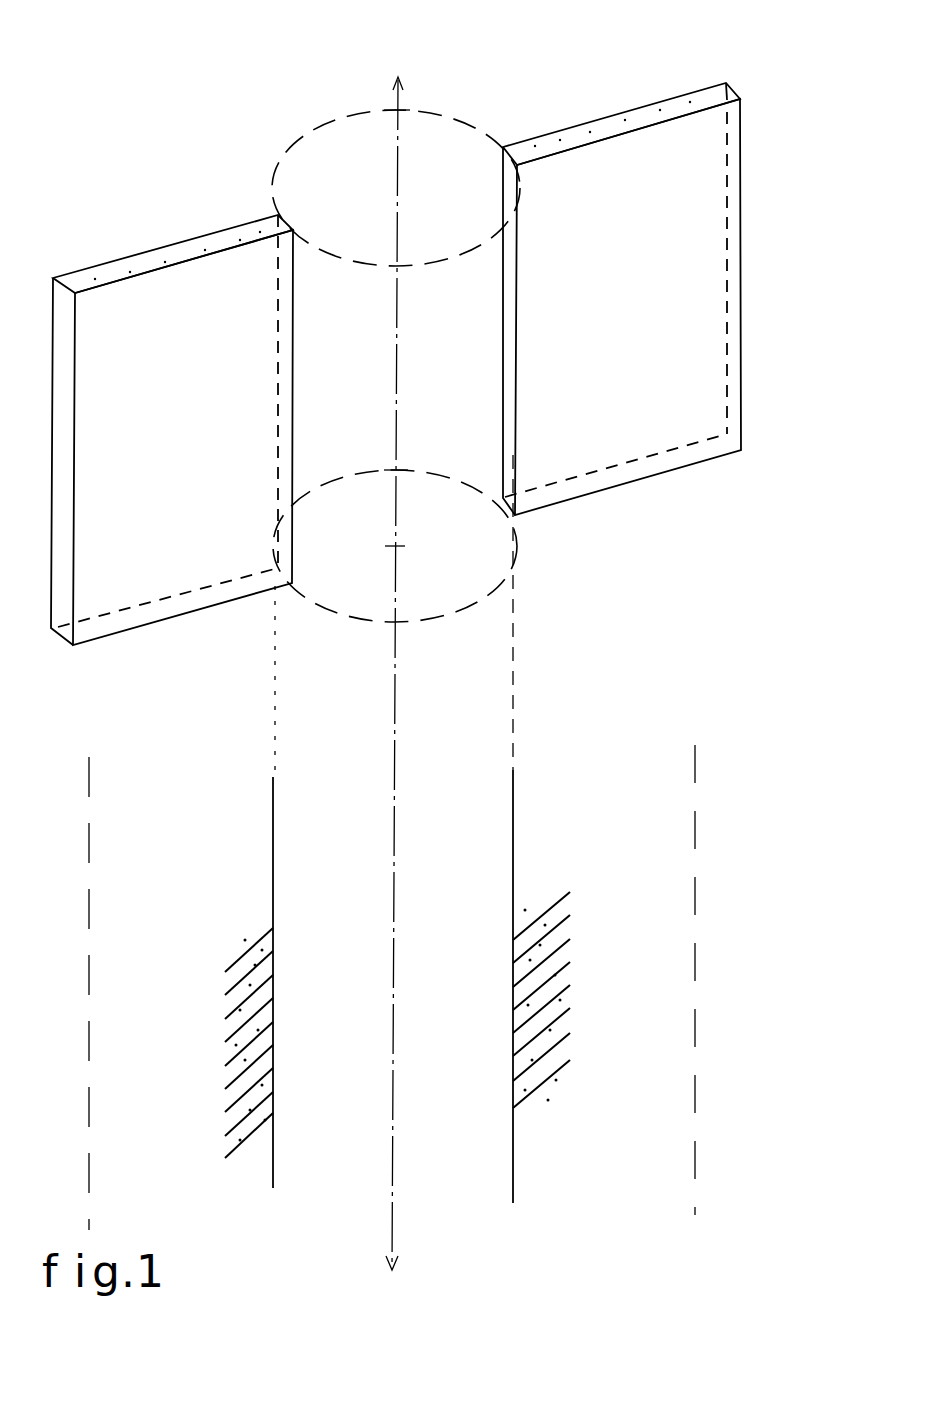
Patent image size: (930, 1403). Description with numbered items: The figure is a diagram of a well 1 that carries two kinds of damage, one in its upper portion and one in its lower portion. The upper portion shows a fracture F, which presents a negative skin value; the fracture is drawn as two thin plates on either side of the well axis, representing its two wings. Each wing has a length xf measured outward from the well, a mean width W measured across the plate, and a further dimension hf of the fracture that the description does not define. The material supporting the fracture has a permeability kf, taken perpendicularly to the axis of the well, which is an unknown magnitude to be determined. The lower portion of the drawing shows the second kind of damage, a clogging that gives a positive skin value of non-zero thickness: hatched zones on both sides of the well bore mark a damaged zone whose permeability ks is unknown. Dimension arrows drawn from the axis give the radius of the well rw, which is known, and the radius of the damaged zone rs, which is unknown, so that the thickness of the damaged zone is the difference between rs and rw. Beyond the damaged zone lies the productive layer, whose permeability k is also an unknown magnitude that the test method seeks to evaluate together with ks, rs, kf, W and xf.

The permeability of the material supporting the fracture kf is at (615, 48).
The mean width of the fracture W is at (175, 333).
The fin height hf is at (742, 443).
The length of one wing of the fracture xf is at (741, 452).
The fracture F is at (223, 533).
The well 1 is at (275, 845).
The permeability of the damaged zone ks is at (570, 986).
The permeability of the productive layer k is at (739, 980).
The radius of the well rw is at (510, 1145).
The radius of the damaged zone rs is at (392, 1170).